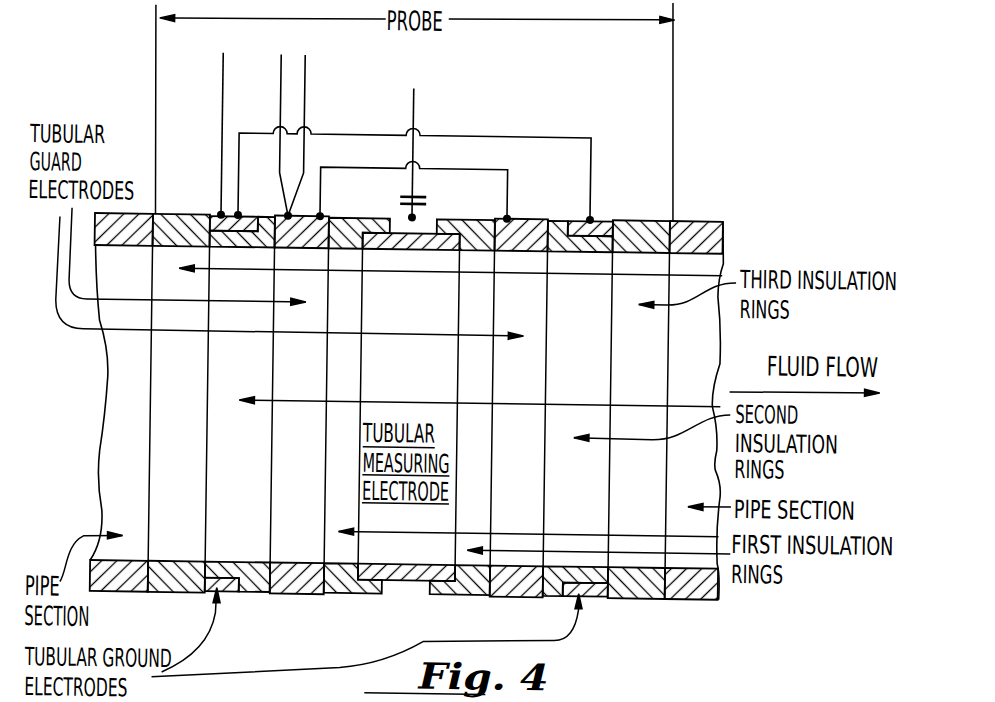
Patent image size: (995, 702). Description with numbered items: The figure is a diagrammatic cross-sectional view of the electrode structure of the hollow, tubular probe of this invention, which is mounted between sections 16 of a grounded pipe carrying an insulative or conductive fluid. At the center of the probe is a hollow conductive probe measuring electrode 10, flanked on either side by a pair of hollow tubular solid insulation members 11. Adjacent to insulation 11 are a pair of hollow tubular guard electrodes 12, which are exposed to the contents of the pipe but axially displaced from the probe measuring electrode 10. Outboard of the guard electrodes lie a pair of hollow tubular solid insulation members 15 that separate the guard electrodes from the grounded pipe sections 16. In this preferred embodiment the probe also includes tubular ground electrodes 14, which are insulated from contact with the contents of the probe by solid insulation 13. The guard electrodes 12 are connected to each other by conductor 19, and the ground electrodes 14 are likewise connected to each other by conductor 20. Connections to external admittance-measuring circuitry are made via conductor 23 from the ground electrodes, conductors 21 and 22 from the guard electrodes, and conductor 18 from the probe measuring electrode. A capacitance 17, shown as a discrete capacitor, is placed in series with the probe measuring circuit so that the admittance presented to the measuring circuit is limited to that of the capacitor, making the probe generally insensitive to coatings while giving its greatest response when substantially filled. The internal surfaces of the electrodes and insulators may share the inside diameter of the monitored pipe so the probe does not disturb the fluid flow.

The probe measuring electrode 10 is at (412, 572).
The solid insulation members 11 is at (360, 596).
The guard electrodes 12 is at (304, 590).
The solid insulation 13 is at (266, 591).
The tubular ground electrodes 14 is at (232, 591).
The solid insulation members 15 is at (185, 579).
The pipe sections 16 is at (136, 577).
The capacitance 17 is at (427, 194).
The conductor 18 is at (414, 104).
The conductor 19 is at (508, 187).
The conductor 20 is at (591, 156).
The conductor 21 is at (303, 85).
The conductor 22 is at (278, 80).
The conductor 23 is at (220, 78).